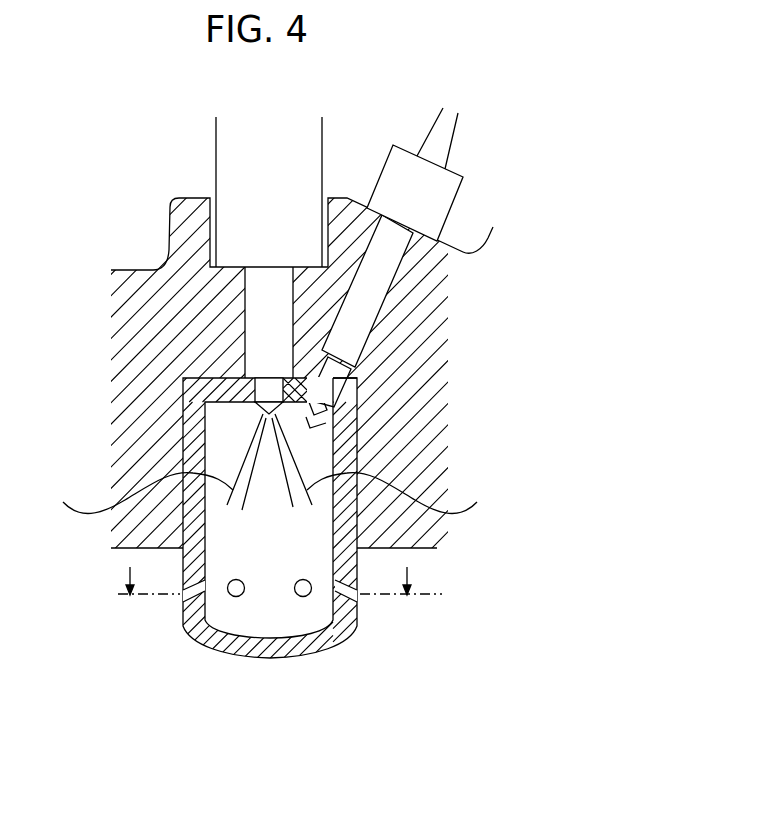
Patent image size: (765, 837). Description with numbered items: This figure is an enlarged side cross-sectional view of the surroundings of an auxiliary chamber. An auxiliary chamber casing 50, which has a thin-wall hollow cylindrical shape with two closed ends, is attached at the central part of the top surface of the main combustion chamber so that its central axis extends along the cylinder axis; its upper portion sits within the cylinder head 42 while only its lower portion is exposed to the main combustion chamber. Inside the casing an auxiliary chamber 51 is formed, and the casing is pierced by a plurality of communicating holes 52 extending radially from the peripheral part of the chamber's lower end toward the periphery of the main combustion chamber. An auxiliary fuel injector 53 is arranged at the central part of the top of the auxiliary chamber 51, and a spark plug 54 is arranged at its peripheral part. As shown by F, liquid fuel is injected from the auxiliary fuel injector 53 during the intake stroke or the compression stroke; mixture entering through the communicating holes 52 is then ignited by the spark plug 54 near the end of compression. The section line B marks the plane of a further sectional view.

The cylinder head 42 is at (155, 326).
The auxiliary chamber casing 50 is at (228, 643).
The auxiliary chamber 51 is at (277, 612).
The communicating holes 52 is at (302, 579).
The auxiliary fuel injector 53 is at (240, 162).
The spark plug 54 is at (395, 168).
The liquid fuel injection F is at (267, 494).
The section line B- B is at (271, 581).